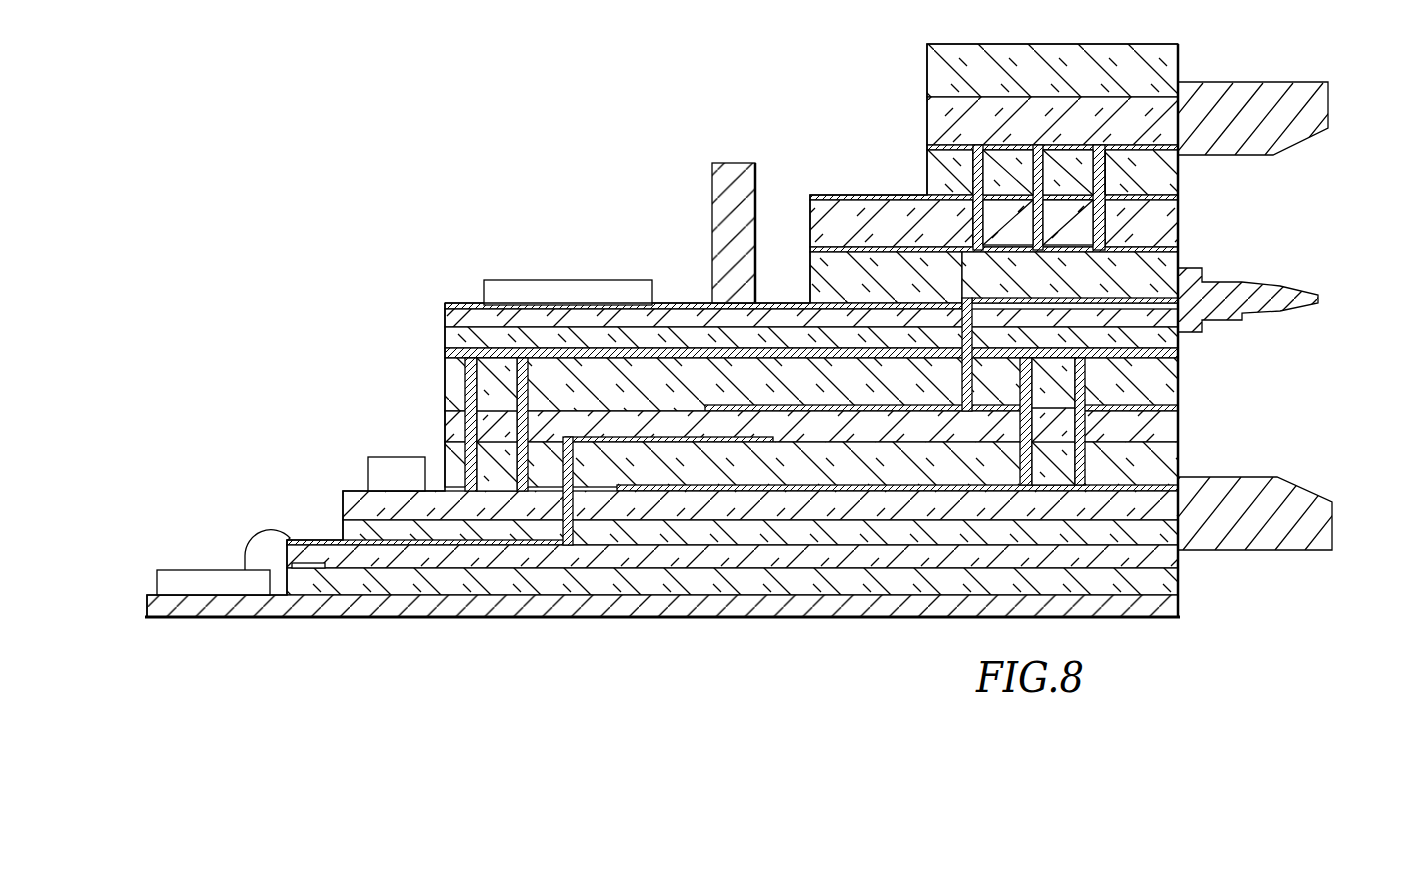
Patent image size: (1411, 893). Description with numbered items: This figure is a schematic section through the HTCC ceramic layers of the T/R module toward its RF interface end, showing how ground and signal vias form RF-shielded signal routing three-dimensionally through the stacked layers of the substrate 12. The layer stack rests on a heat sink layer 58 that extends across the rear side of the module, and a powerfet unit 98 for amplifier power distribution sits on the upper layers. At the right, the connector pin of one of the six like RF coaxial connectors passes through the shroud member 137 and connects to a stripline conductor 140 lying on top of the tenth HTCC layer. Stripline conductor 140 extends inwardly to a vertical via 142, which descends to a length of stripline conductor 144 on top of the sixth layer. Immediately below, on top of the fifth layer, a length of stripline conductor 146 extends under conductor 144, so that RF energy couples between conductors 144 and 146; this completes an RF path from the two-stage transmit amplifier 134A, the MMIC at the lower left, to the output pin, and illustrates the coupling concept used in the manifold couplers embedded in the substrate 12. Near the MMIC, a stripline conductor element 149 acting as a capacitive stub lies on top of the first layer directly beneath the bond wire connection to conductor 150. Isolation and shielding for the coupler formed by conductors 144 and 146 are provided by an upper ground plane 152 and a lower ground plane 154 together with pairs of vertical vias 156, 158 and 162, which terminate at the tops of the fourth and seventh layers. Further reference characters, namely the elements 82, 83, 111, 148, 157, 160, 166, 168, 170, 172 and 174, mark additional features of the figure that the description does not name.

The substrate 12 is at (542, 178).
The module assembly 82 is at (1311, 385).
The multilayer substrate 83 is at (526, 592).
The heat sink layer 58 is at (183, 614).
The powerfet unit 98 is at (513, 284).
The conductive post 111 is at (712, 182).
The two-stage transmit amplifier 134A is at (157, 589).
The shroud member 137 is at (1330, 96).
The stripline conductor 140 is at (1036, 300).
The vertical via 142 is at (962, 378).
The stripline conductor 144 is at (746, 405).
The stripline conductor 146 is at (672, 443).
The vertical conductor 148 is at (575, 467).
The stripline conductor element 149 is at (302, 568).
The conductor 150 is at (336, 540).
The upper ground plane 152 is at (629, 308).
The lower ground plane 154 is at (820, 486).
The vertical via 156 is at (470, 419).
The wire bond 157 is at (266, 530).
The vertical via 158 is at (530, 380).
The via 160 is at (1020, 458).
The vertical via 162 is at (1087, 458).
The conductor layer 166 is at (864, 196).
The via 168 is at (1013, 150).
The via conductor 170 is at (973, 221).
The via 172 is at (1053, 160).
The via wall conductor 174 is at (1104, 169).